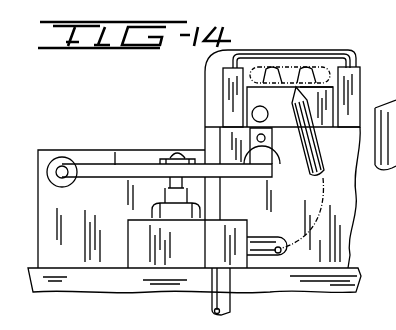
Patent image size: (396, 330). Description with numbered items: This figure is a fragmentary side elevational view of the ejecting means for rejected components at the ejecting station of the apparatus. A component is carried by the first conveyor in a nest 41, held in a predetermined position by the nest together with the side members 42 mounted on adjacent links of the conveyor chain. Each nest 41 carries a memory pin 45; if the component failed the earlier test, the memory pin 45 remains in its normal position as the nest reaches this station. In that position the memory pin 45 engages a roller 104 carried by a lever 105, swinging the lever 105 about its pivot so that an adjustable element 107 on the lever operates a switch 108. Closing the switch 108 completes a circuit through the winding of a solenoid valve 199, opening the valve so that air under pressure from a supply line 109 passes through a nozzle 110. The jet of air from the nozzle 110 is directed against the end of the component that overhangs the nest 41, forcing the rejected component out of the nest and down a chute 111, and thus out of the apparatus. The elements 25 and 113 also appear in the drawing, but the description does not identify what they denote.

The cam member 25 is at (322, 73).
The nest 41 is at (325, 118).
The side members 42 is at (226, 80).
The memory pin 45 is at (266, 111).
The roller 104 is at (277, 146).
The lever 105 is at (110, 178).
The adjustable element 107 is at (173, 182).
The switch 108 is at (62, 161).
The supply line 109 is at (230, 303).
The nozzle 110 is at (271, 77).
The chute 111 is at (265, 53).
The bracket 113 is at (390, 189).
The solenoid valve 199 is at (232, 223).